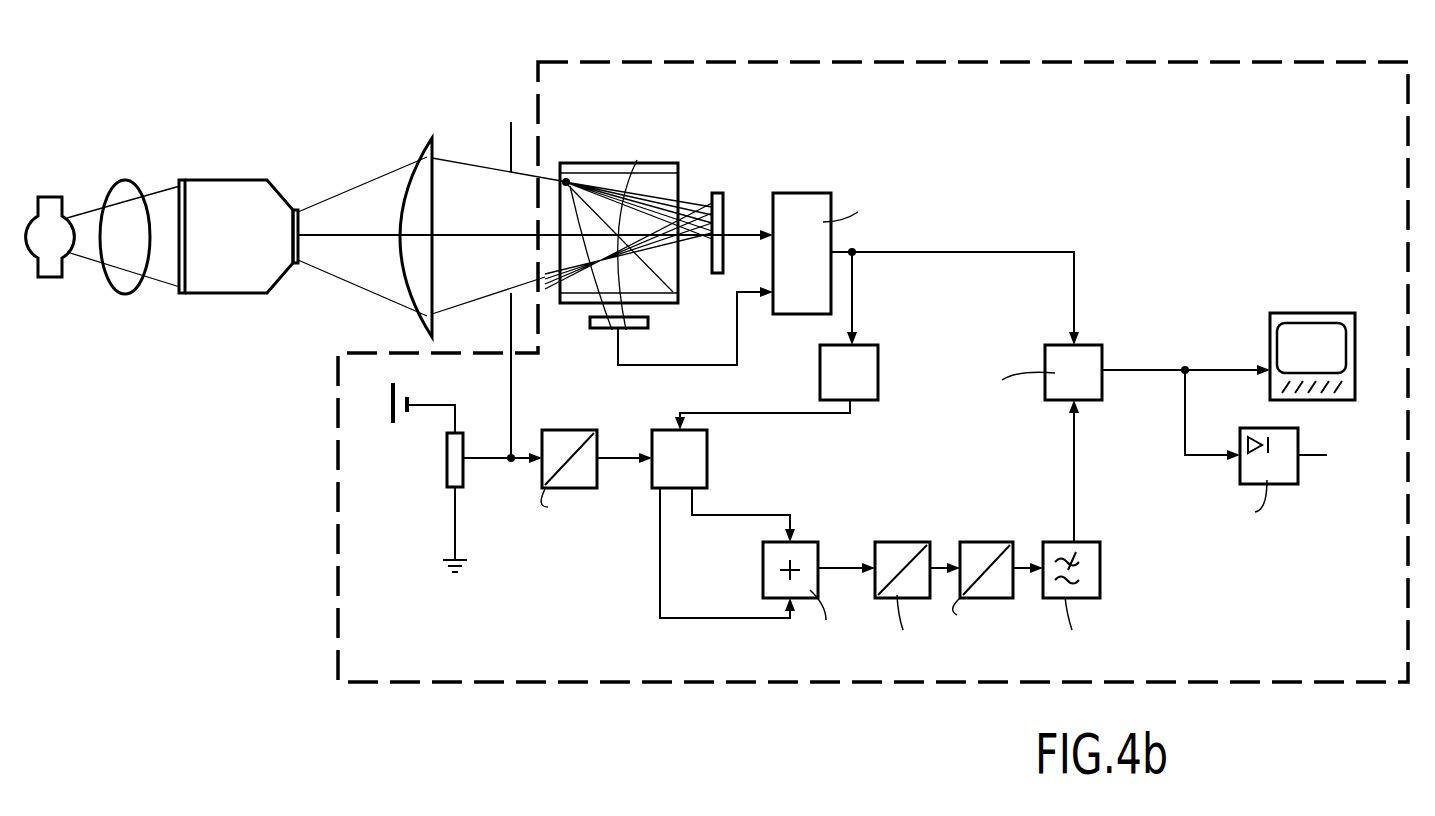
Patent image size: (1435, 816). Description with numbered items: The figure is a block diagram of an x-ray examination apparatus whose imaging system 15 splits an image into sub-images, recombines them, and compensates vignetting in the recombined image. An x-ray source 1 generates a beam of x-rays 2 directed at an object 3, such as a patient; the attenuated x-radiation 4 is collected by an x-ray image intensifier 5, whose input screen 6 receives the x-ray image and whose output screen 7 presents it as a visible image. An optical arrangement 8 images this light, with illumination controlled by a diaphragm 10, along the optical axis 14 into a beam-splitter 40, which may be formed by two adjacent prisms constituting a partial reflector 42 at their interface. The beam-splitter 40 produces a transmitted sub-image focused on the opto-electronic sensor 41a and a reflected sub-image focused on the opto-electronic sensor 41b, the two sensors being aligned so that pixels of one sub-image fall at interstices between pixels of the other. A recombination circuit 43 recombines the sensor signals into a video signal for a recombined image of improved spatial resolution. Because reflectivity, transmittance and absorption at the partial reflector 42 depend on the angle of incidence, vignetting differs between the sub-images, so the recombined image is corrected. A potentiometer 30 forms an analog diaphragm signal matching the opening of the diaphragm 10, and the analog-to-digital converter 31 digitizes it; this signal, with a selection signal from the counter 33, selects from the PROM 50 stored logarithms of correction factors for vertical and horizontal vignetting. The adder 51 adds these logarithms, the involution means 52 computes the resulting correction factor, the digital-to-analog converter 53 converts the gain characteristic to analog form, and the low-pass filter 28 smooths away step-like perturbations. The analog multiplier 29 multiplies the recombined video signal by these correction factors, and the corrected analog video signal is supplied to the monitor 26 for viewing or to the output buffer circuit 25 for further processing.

The x-ray source 1 is at (51, 197).
The beam of x-rays 2 is at (85, 212).
The object 3 is at (125, 192).
The attenuated x-radiation 4 is at (161, 206).
The x-ray image intensifier 5 is at (243, 182).
The input screen 6 is at (183, 180).
The output screen 7 is at (296, 208).
The optical arrangement 8 is at (422, 154).
The diaphragm 10 is at (513, 147).
The optical axis 14 is at (350, 236).
The imaging system 15 is at (1362, 78).
The beam-splitter 40 is at (667, 182).
The opto-electronic sensor 41a is at (718, 193).
The opto-electronic sensor 41b is at (600, 327).
The partial reflector 42 is at (637, 160).
The recombination circuit 43 is at (812, 207).
The counter 33 is at (873, 352).
The analog multiplier 29 is at (1102, 345).
The monitor 26 is at (1363, 303).
The output buffer circuit 25 is at (1283, 477).
The potentiometer 30 is at (447, 458).
The analog-to-digital converter 31 is at (575, 430).
The PROM 50 is at (700, 443).
The adder 51 is at (805, 547).
The involution means 52 is at (913, 547).
The digital-to-analog converter 53 is at (998, 542).
The low-pass filter 28 is at (1093, 595).